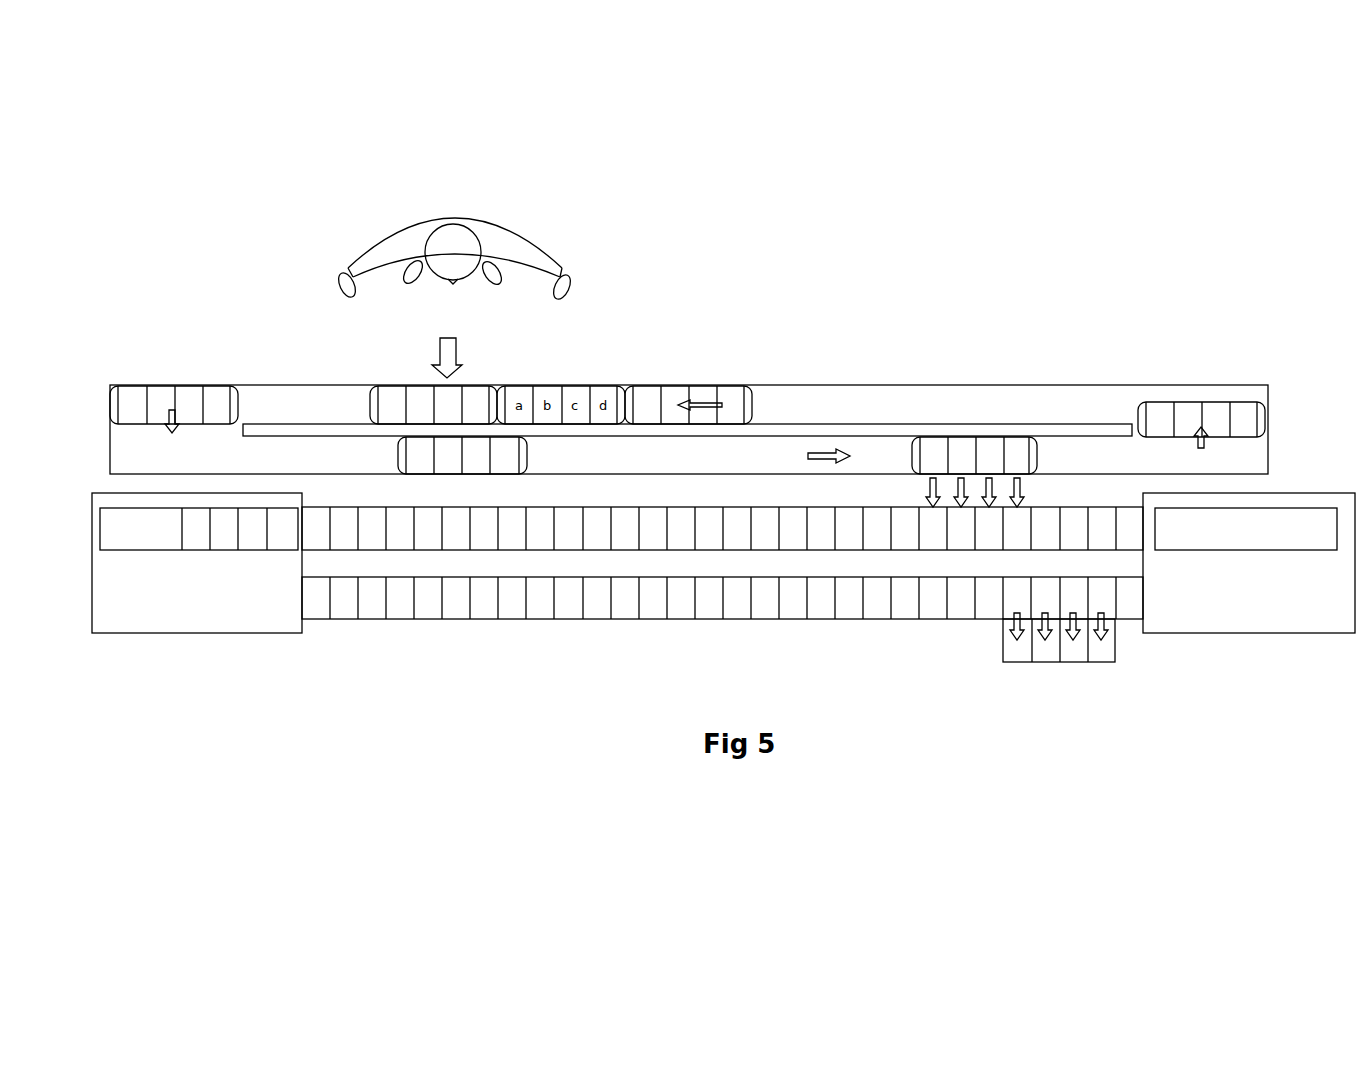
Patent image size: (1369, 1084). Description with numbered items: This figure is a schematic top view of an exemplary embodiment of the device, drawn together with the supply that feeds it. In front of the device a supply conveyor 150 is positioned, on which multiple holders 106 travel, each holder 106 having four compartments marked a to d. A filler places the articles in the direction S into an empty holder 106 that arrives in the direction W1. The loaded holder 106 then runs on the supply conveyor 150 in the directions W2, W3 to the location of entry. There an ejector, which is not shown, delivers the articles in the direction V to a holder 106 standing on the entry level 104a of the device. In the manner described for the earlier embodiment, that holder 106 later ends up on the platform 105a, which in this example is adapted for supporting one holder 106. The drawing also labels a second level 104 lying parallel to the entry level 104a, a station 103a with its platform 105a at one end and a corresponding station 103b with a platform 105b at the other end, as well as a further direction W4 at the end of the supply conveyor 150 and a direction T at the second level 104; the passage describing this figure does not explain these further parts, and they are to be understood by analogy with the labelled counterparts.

The supply conveyor 150 is at (835, 400).
The holder 106 is at (733, 397).
The entry level 104a is at (623, 530).
The lower transport conveyor 104 is at (602, 590).
The right transfer station 103a is at (1208, 597).
The left transfer station 103b is at (207, 608).
The platform 105a is at (1312, 540).
The left buffer conveyor 105b is at (135, 530).
The placing direction S is at (454, 298).
The arrival direction W1 is at (710, 390).
The running direction W2 is at (172, 418).
The running direction W3 is at (805, 455).
The workpiece flow direction 4 W4 is at (1205, 443).
The delivery direction V is at (1025, 488).
The transfer direction T is at (1012, 625).